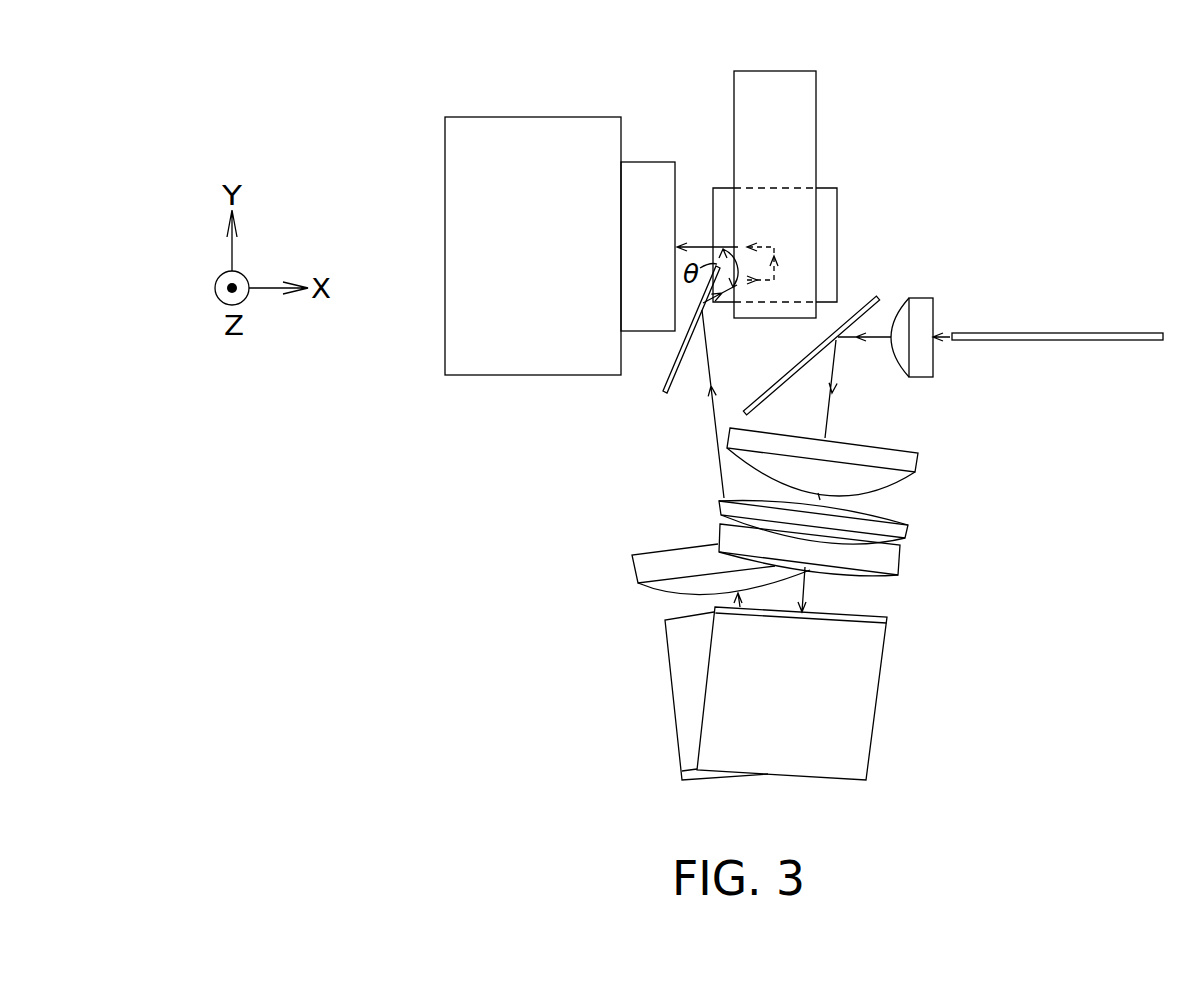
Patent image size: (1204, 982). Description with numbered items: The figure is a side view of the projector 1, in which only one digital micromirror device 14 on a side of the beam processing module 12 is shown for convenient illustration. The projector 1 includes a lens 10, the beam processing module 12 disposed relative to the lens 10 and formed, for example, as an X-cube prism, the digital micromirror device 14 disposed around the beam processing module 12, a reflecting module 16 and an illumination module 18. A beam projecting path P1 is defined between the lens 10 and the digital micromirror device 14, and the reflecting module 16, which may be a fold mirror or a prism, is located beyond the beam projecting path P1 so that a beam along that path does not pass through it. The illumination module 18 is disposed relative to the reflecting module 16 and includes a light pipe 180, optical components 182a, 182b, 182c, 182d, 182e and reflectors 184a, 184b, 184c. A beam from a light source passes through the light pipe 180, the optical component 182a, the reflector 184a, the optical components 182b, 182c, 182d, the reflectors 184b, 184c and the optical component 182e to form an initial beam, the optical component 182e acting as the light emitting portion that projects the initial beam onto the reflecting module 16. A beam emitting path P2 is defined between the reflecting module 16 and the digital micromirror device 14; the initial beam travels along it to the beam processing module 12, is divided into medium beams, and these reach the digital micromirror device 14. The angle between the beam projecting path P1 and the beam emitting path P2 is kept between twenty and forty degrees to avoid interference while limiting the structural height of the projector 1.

The projector 1 is at (1080, 78).
The lens 10 is at (488, 117).
The beam processing module 12 is at (775, 71).
The digital micromirror device 14 is at (836, 188).
The reflecting module 16 is at (666, 374).
The illumination module 18 is at (966, 293).
The light pipe 180 is at (1125, 341).
The optical component 182a is at (920, 378).
The optical component 182b is at (917, 464).
The optical component 182c is at (908, 534).
The optical component 182d is at (900, 562).
The optical component 182e is at (632, 563).
The reflector 184a is at (868, 302).
The reflector 184b is at (874, 712).
The reflector 184c is at (668, 678).
The beam projecting path P1 is at (702, 247).
The beam emitting path P2 is at (710, 308).